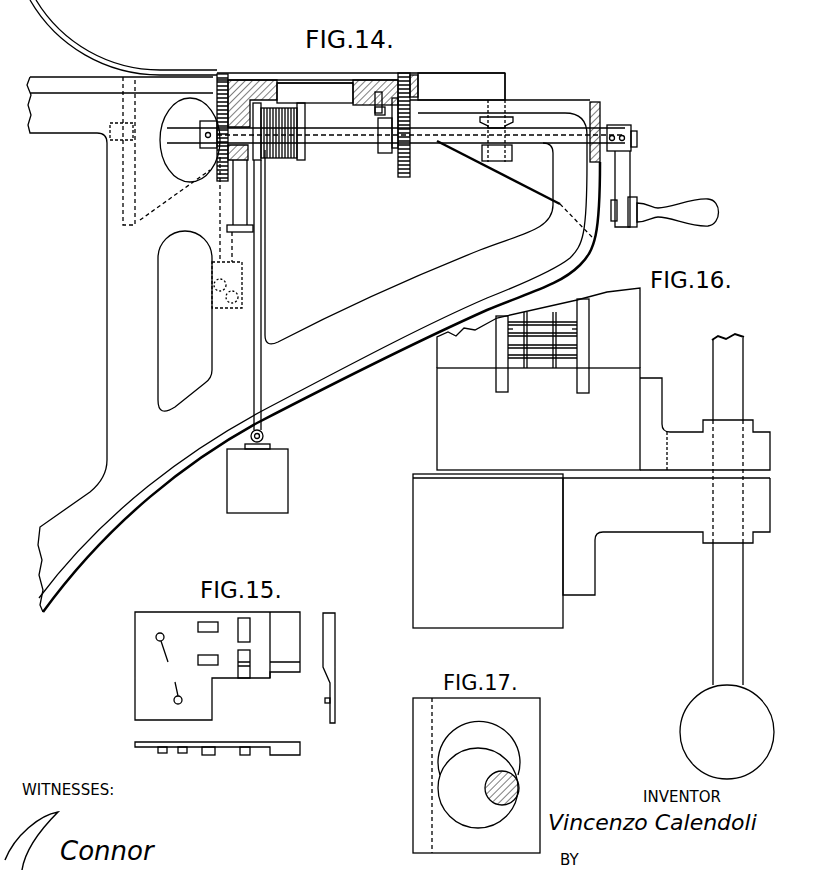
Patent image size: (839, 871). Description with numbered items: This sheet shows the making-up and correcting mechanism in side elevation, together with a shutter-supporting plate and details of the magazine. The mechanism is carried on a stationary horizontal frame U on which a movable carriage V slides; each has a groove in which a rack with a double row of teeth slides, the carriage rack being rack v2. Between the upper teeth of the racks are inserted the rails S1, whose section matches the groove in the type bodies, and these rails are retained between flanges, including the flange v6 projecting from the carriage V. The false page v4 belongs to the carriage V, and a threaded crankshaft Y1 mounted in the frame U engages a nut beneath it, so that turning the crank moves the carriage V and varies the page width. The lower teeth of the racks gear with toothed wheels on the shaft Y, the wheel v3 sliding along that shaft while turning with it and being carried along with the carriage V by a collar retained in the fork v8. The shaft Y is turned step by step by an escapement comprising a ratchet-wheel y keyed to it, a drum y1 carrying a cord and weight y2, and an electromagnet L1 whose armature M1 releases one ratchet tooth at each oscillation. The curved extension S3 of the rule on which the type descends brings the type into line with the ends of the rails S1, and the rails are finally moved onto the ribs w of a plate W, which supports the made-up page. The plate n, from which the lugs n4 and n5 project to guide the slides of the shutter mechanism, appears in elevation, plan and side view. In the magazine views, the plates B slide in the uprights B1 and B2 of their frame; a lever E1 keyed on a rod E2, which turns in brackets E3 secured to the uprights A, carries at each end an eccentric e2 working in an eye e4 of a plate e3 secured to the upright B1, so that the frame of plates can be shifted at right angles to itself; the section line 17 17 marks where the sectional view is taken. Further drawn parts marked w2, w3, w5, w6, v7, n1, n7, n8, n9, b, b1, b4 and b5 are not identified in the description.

In FIG. 14, the ribs w is at (313, 344).
In FIG. 14, the extension of the rule S3 is at (123, 37).
In FIG. 14, the frame top bar w3 is at (121, 71).
In FIG. 14, the gear wheel w2 is at (230, 73).
In FIG. 14, the bearing block w6 is at (216, 89).
In FIG. 14, the ratchet-wheel y is at (190, 140).
In FIG. 14, the shaft end w5 is at (216, 151).
In FIG. 14, the armature M1 is at (217, 163).
In FIG. 14, the stationary horizontal frame U is at (277, 76).
In FIG. 14, the rods or rails S1 is at (330, 83).
In FIG. 14, the plate W is at (327, 83).
In FIG. 14, the movable piece or carriage V is at (366, 82).
In FIG. 14, the rack v2 is at (404, 78).
In FIG. 14, the flange v6 is at (422, 86).
In FIG. 14, the false page v4 is at (486, 100).
In FIG. 14, the toothed wheel v3 is at (411, 160).
In FIG. 14, the drum or pulley y1 is at (296, 144).
In FIG. 14, the shaft Y is at (421, 144).
In FIG. 14, the fork v8 is at (385, 153).
In FIG. 14, the bracket clamp v7 is at (496, 131).
In FIG. 14, the crankshaft Y1 is at (654, 164).
In FIG. 14, the electromagnet L1 is at (233, 184).
In FIG. 14, the weight y2 is at (257, 336).
In FIG. 15, the plate n is at (335, 628).
In FIG. 15, the pivot link n1 is at (169, 668).
In FIG. 15, the lug n5 is at (205, 635).
In FIG. 15, the lug n4 is at (205, 713).
In FIG. 15, the slot n8 is at (252, 630).
In FIG. 15, the slot n9 is at (243, 710).
In FIG. 15, the lug n7 is at (325, 701).
In FIG. 16, the upright B1 is at (538, 419).
In FIG. 16, the upright B2 is at (538, 328).
In FIG. 16, the plates B is at (538, 346).
In FIG. 16, the cross bars b is at (541, 352).
In FIG. 16, the vertical bars b1 is at (545, 330).
In FIG. 16, the bar end b5 is at (510, 330).
In FIG. 16, the bar end b4 is at (572, 328).
In FIG. 16, the plate e3 is at (705, 424).
In FIG. 17, the plate e3 is at (476, 775).
In FIG. 16, the section line 17 is at (598, 480).
In FIG. 16, the uprights A is at (488, 551).
In FIG. 16, the bearings or brackets E3 is at (666, 536).
In FIG. 16, the rod E2 is at (728, 509).
In FIG. 17, the rod E2 is at (508, 788).
In FIG. 16, the lever E1 is at (727, 732).
In FIG. 17, the eye e4 is at (479, 748).
In FIG. 17, the eccentric e2 is at (478, 788).